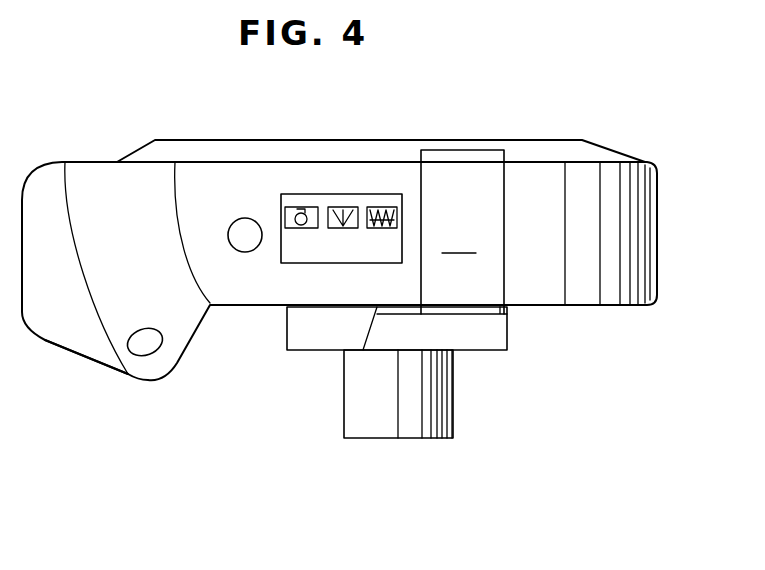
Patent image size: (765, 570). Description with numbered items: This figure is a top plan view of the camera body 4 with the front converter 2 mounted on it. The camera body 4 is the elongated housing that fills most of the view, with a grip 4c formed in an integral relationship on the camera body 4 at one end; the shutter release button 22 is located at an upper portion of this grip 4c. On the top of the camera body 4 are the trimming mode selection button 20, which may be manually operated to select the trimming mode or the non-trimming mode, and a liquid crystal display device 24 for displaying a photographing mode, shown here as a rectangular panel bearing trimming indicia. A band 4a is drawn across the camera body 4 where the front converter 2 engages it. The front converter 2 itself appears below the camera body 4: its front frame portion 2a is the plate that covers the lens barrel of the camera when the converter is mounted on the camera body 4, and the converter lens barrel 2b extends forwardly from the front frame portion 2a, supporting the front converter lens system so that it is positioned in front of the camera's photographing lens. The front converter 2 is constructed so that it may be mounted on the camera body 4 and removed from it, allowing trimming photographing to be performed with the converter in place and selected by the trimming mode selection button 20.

The front converter 2 is at (387, 386).
The front frame portion 2a is at (287, 330).
The converter lens barrel 2b is at (343, 395).
The camera body 4 is at (653, 223).
The band on camera body 4a is at (472, 140).
The grip 4c is at (137, 370).
The trimming mode selection button 20 is at (244, 224).
The shutter release button 22 is at (147, 343).
The liquid crystal display device 24 is at (342, 194).